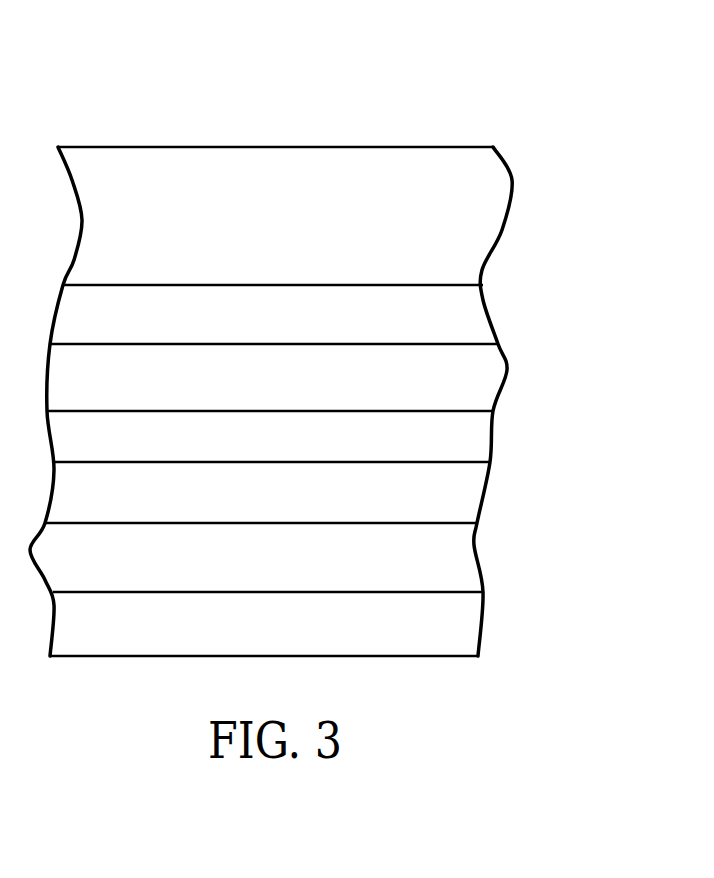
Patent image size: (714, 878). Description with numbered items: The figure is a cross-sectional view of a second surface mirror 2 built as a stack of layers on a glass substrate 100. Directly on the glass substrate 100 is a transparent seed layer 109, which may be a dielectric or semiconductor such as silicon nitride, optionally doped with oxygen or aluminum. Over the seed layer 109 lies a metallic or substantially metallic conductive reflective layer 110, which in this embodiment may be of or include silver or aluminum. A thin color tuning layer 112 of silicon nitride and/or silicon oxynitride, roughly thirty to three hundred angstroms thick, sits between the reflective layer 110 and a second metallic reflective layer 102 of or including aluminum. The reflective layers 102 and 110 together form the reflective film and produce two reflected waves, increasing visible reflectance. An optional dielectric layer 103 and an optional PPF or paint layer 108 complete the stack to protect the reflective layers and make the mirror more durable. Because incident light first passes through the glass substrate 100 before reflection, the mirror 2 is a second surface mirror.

The mirror 2 is at (506, 77).
The glass substrate 100 is at (487, 224).
The transparent seed layer 109 is at (472, 314).
The reflective layer 110 is at (485, 364).
The color tuning layer 112 is at (472, 439).
The reflective layer 102 is at (482, 497).
The dielectric layer 103 is at (467, 560).
The PPF or paint layer 108 is at (467, 628).